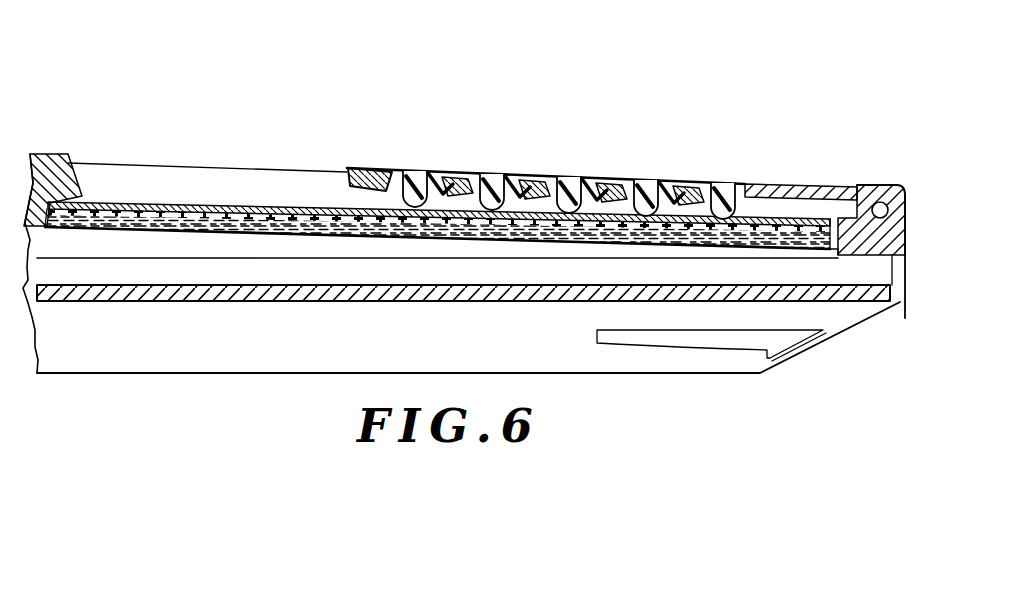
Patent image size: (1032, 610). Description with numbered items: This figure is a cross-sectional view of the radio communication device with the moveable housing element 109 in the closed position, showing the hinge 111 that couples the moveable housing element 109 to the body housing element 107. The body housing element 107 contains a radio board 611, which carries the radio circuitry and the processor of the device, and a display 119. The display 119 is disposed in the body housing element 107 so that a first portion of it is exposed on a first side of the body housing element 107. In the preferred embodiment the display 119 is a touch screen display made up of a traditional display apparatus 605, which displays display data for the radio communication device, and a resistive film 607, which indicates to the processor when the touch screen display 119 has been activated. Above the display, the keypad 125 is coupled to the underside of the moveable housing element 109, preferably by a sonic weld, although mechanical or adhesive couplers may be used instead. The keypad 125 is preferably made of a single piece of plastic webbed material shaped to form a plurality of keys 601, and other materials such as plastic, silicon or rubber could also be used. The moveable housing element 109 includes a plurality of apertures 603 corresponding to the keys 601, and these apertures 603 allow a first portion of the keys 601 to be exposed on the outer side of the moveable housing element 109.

The body housing element 107 is at (903, 302).
The moveable housing element 109 is at (371, 167).
The hinge 111 is at (891, 200).
The display 119 is at (217, 224).
The keypad 125 is at (379, 176).
The keys 601 is at (493, 178).
The apertures 603 is at (468, 178).
The display apparatus 605 is at (153, 202).
The resistive film 607 is at (278, 207).
The radio board 611 is at (253, 287).